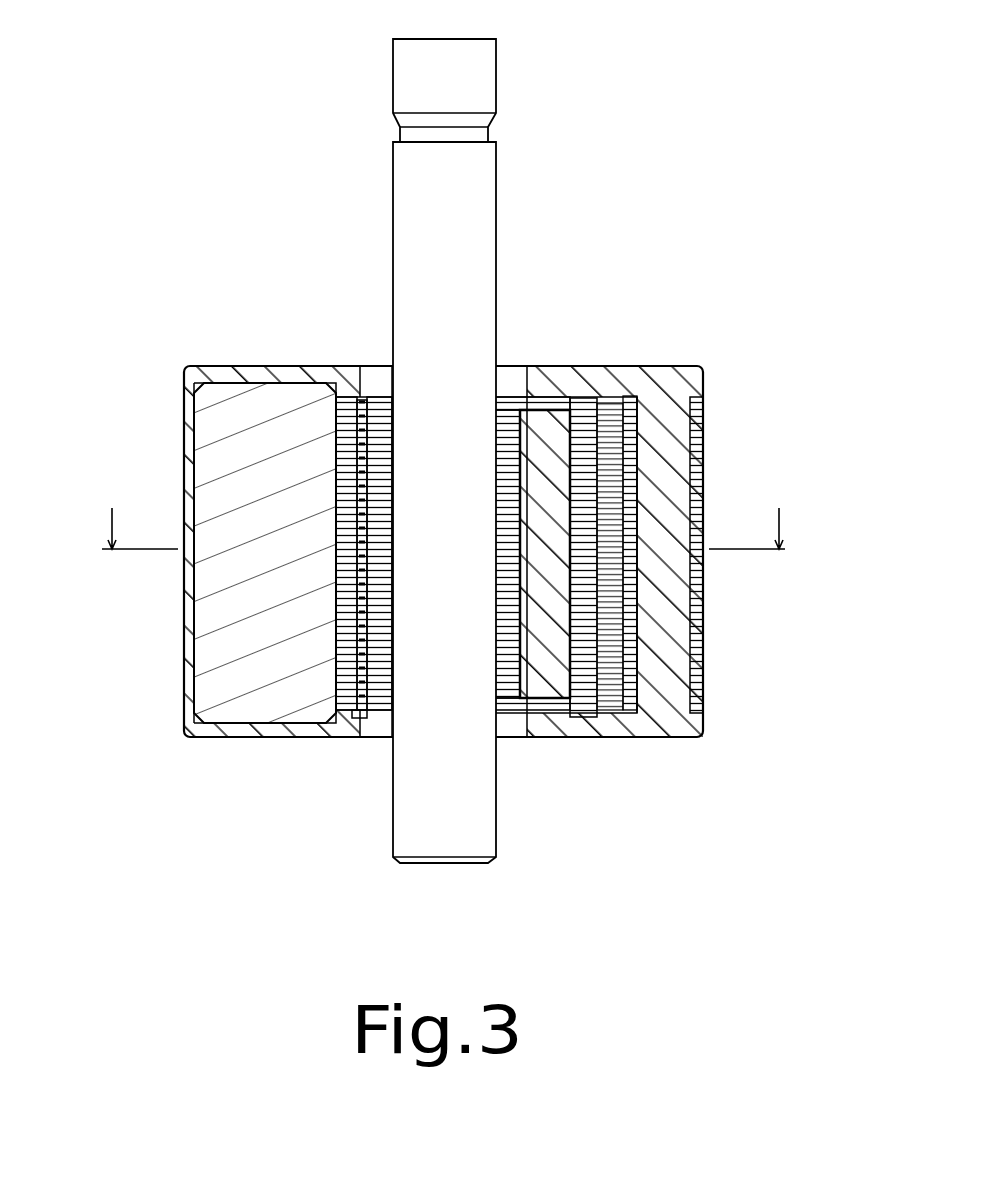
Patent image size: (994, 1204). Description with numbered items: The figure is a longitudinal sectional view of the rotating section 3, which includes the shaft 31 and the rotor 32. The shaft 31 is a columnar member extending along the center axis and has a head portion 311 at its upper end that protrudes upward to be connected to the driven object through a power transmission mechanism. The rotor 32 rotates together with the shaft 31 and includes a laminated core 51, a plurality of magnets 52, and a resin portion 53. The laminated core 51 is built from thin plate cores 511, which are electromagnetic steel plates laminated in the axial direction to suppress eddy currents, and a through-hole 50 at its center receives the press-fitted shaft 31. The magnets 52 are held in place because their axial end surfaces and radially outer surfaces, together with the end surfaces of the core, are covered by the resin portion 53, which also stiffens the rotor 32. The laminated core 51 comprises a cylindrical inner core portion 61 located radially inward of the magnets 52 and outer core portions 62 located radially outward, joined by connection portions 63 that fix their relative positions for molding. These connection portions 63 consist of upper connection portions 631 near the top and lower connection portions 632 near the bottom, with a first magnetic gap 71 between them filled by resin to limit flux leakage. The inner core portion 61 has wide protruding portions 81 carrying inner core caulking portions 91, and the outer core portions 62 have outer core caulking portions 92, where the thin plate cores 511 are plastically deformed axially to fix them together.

The rotating section 3 is at (442, 450).
The shaft 31 is at (500, 450).
The head portion 311 is at (472, 77).
The rotor 32 is at (165, 413).
The through-hole 50 is at (482, 450).
The laminated core 51 is at (513, 390).
The thin plate cores 511 is at (697, 680).
The magnets 52 is at (270, 430).
The resin portion 53 is at (660, 390).
The inner core portion 61 is at (380, 430).
The outer core portions 62 is at (585, 430).
The connection portions 63 is at (540, 558).
The upper connection portions 631 is at (548, 402).
The lower connection portions 632 is at (545, 705).
The first magnetic gap 71 is at (548, 485).
The wide protruding portions 81 is at (347, 668).
The inner core caulking portions 91 is at (357, 705).
The outer core caulking portions 92 is at (612, 695).